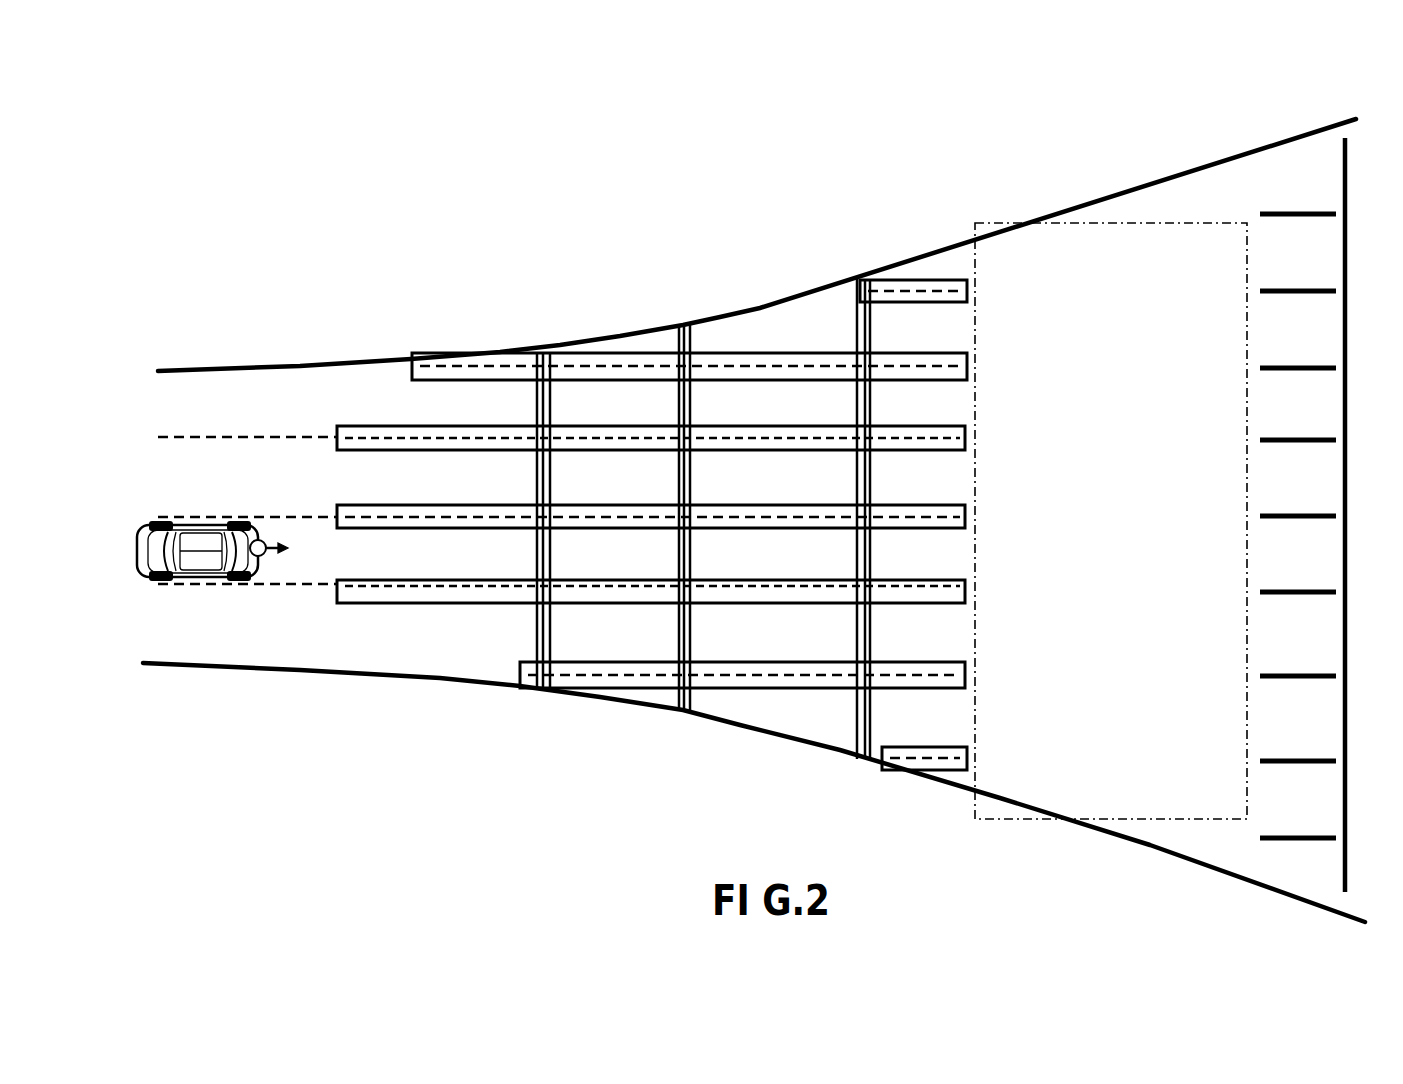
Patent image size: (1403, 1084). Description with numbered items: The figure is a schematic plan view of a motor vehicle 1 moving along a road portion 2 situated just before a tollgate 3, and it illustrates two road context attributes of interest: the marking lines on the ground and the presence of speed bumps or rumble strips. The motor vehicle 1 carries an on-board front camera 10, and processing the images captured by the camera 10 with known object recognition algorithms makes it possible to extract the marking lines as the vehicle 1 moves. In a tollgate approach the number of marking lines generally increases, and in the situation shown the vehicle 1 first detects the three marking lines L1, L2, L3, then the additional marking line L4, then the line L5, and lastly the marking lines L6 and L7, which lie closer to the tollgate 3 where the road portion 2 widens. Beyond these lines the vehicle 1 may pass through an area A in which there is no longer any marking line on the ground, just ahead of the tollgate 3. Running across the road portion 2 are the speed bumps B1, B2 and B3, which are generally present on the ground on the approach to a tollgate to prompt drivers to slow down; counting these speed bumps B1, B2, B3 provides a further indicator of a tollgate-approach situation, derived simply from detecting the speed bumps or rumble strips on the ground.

The motor vehicle 1 is at (208, 585).
The camera 10 is at (263, 560).
The road portion 2 is at (762, 301).
The tollgate 3 is at (1296, 188).
The area A is at (1156, 222).
The marking line L1 is at (376, 600).
The marking line L2 is at (405, 528).
The marking line L3 is at (405, 450).
The marking line L4 is at (565, 373).
The marking line L5 is at (752, 683).
The marking line L6 is at (898, 300).
The marking line L7 is at (917, 762).
The speed bump B1 is at (545, 463).
The speed bump B2 is at (690, 463).
The speed bump B3 is at (871, 463).